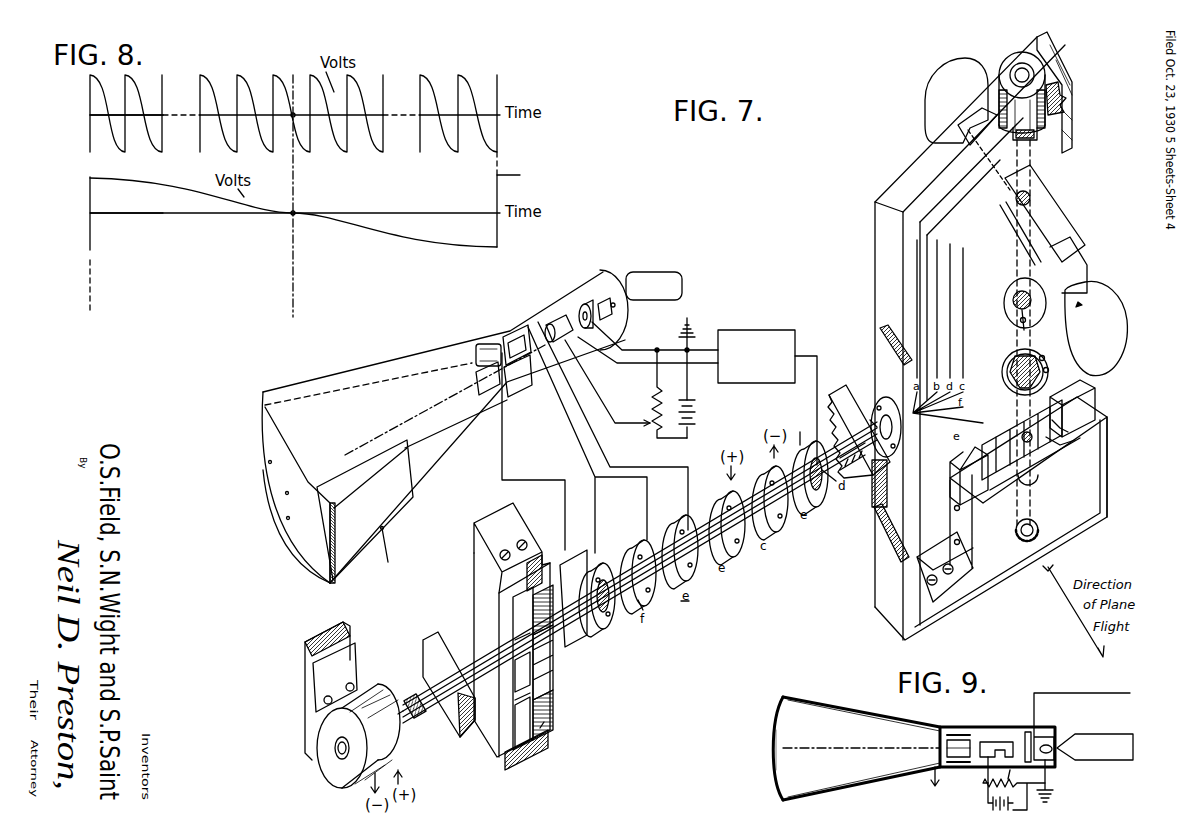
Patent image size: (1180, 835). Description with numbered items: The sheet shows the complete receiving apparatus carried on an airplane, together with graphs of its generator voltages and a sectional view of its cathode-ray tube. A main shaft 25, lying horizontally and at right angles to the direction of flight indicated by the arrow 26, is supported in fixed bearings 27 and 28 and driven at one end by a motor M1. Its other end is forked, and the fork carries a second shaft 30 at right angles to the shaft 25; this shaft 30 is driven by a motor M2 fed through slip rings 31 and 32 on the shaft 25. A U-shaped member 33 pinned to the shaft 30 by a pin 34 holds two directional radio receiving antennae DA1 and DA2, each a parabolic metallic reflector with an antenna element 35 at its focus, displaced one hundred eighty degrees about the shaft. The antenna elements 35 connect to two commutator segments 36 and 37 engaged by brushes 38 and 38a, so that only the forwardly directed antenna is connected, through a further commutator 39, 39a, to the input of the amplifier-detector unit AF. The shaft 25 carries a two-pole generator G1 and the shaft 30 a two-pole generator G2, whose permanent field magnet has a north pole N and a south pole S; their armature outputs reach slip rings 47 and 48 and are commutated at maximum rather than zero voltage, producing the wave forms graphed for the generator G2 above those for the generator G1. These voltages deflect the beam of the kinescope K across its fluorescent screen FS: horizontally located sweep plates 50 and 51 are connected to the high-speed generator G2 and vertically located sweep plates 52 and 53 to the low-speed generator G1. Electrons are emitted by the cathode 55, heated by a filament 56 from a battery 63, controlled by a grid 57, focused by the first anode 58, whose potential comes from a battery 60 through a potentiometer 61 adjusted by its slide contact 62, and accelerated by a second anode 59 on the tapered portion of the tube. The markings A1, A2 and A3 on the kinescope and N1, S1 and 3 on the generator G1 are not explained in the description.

In FIG. 7, the cathode-ray tube K is at (280, 395).
In FIG. 9, the cathode-ray tube K is at (788, 700).
In FIG. 7, the fluorescent screen FS is at (304, 550).
In FIG. 9, the fluorescent screen FS is at (775, 762).
In FIG. 7, the point on horn mouth A1 is at (298, 527).
In FIG. 7, the point on horn mouth A2 is at (298, 502).
In FIG. 7, the point on horn mouth A3 is at (270, 464).
In FIG. 7, the second anode 59 is at (413, 480).
In FIG. 9, the second anode 59 is at (830, 710).
In FIG. 7, the horizontally located sweep plate 50 is at (478, 347).
In FIG. 9, the horizontally located sweep plate 50 is at (952, 733).
In FIG. 7, the vertically located sweep plate 52 is at (510, 336).
In FIG. 7, the vertically located sweep plate 53 is at (488, 393).
In FIG. 9, the vertically located sweep plate 53 is at (946, 745).
In FIG. 7, the horizontally located sweep plate 51 is at (522, 393).
In FIG. 9, the horizontally located sweep plate 51 is at (946, 757).
In FIG. 7, the focusing or anode structure 58 is at (550, 323).
In FIG. 9, the focusing or anode structure 58 is at (985, 740).
In FIG. 7, the grid or controlling element 57 is at (580, 305).
In FIG. 9, the grid or controlling element 57 is at (1027, 731).
In FIG. 7, the heater or cathode 55 is at (598, 302).
In FIG. 9, the heater or cathode 55 is at (1040, 736).
In FIG. 7, the filament 56 is at (613, 300).
In FIG. 9, the filament 56 is at (1052, 744).
In FIG. 7, the battery 63 is at (672, 285).
In FIG. 9, the battery 63 is at (1122, 746).
In FIG. 7, the amplifier-detector unit AF is at (750, 331).
In FIG. 7, the potentiometer 61 is at (652, 398).
In FIG. 9, the potentiometer 61 is at (1014, 770).
In FIG. 7, the battery 60 is at (699, 419).
In FIG. 9, the battery 60 is at (987, 804).
In FIG. 7, the slide contact 62 is at (647, 426).
In FIG. 9, the slide contact 62 is at (986, 777).
In FIG. 7, the main shaft 25 is at (618, 615).
In FIG. 7, the slip ring 48 is at (640, 545).
In FIG. 7, the slip ring 47 is at (680, 520).
In FIG. 7, the slip ring 31 is at (740, 548).
In FIG. 7, the slip ring 32 is at (783, 523).
In FIG. 7, the commutator 39 is at (822, 500).
In FIG. 7, the commutator 39a is at (798, 429).
In FIG. 7, the fixed bearing 28 is at (858, 396).
In FIG. 7, the motor M2 is at (1013, 62).
In FIG. 7, the directional radio receiving antenna DA2 is at (931, 90).
In FIG. 7, the antenna element 35 is at (962, 128).
In FIG. 7, the U-shaped member 33 is at (1052, 218).
In FIG. 7, the second shaft 30 is at (1031, 199).
In FIG. 7, the pin 34 is at (1005, 212).
In FIG. 7, the brush 38a is at (1066, 267).
In FIG. 7, the commutator segment 36 is at (1008, 300).
In FIG. 7, the commutator segment 37 is at (1018, 292).
In FIG. 7, the brush 38 is at (1010, 318).
In FIG. 7, the directional radio receiving antenna DA1 is at (1099, 321).
In FIG. 8, the two pole generator G2 is at (110, 116).
In FIG. 7, the two pole generator G2 is at (1000, 512).
In FIG. 7, the north pole N is at (969, 476).
In FIG. 7, the south pole S is at (1072, 408).
In FIG. 7, the arrow 26 is at (1083, 597).
In FIG. 8, the two pole generator G1 is at (110, 214).
In FIG. 7, the two pole generator G1 is at (478, 590).
In FIG. 7, the north pole piece N1 is at (543, 606).
In FIG. 7, the south pole piece S1 is at (543, 715).
In FIG. 7, the pole piece 3 is at (546, 718).
In FIG. 7, the fixed bearing 27 is at (438, 636).
In FIG. 7, the motor M1 is at (335, 777).